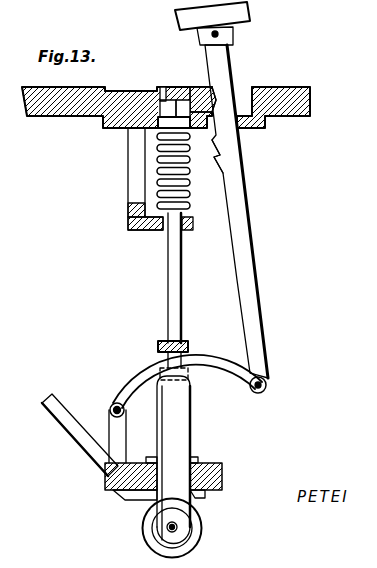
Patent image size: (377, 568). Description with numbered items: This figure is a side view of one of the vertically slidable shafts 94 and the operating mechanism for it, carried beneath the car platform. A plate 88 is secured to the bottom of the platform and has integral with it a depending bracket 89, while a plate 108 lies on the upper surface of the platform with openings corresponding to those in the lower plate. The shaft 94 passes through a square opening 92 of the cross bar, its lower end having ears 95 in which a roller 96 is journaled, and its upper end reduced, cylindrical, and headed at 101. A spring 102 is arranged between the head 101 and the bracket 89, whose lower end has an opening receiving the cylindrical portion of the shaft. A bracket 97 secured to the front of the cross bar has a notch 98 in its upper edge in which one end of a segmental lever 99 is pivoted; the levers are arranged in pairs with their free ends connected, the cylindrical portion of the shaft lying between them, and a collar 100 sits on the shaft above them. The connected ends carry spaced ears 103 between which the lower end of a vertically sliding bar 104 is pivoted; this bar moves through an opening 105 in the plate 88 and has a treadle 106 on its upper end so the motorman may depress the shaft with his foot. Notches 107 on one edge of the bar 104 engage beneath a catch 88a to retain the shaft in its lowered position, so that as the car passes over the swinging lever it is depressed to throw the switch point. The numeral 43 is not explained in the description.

The tube 43 is at (189, 426).
The plate 88 is at (113, 137).
The catch 88a is at (215, 100).
The depending bracket 89 is at (127, 222).
The square opening 92 is at (201, 463).
The vertically slidable shaft 94 is at (170, 282).
The ears 95 is at (180, 525).
The roller 96 is at (193, 549).
The bracket 97 is at (118, 468).
The notch 98 is at (112, 432).
The segmental lever 99 is at (142, 374).
The collar 100 is at (190, 341).
The head 101 is at (162, 100).
The spring 102 is at (165, 172).
The ears 103 is at (267, 386).
The vertically sliding bar 104 is at (246, 220).
The opening 105 is at (246, 98).
The treadle 106 is at (244, 12).
The notches 107 is at (206, 92).
The plate 108 is at (110, 89).